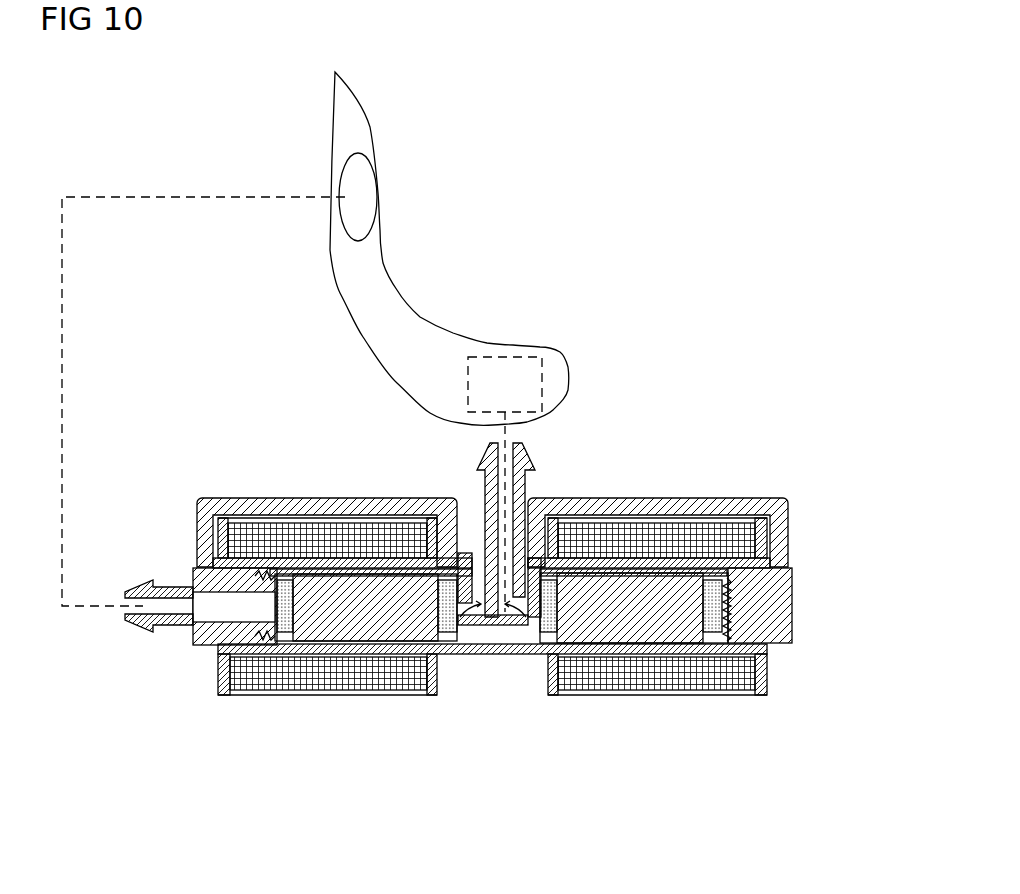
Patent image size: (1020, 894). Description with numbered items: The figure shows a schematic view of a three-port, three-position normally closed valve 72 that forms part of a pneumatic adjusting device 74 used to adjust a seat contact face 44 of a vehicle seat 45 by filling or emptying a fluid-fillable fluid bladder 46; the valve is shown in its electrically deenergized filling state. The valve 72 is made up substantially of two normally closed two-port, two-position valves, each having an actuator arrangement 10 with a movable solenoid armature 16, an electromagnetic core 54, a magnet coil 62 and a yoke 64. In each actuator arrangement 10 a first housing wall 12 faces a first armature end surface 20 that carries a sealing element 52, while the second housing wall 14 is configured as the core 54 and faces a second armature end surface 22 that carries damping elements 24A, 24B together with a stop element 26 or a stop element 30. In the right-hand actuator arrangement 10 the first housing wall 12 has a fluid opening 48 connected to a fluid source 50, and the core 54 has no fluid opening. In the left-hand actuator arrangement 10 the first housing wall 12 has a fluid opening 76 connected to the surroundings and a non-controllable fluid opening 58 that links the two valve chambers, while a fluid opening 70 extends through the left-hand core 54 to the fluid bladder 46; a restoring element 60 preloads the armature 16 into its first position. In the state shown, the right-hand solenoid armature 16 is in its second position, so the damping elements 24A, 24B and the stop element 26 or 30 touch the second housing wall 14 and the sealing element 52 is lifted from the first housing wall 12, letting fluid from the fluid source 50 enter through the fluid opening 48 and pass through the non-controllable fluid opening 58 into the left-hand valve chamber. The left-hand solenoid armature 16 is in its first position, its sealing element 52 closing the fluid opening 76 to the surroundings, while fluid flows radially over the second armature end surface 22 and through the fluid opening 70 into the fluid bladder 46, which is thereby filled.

The actuator arrangement 10 is at (341, 425).
The first housing wall 12 is at (478, 563).
The second housing wall 14 is at (132, 556).
The solenoid armature 16 is at (338, 625).
The first armature end surface 20 is at (478, 655).
The second armature end surface 22 is at (263, 572).
The damping element 24A is at (241, 572).
The damping element 24B is at (240, 695).
The stop element 26 is at (737, 609).
The stop element 30 is at (196, 572).
The seat contact face 44 is at (396, 263).
The vehicle seat 45 is at (504, 103).
The fluid bladder 46 is at (360, 153).
The fluid opening 48 is at (510, 655).
The fluid source 50 is at (505, 357).
The sealing element 52 is at (440, 645).
The electromagnetic core 54 is at (176, 586).
The non-controllable fluid opening 58 is at (502, 655).
The restoring element 60 is at (266, 642).
The magnet coil 62 is at (300, 678).
The yoke 64 is at (392, 505).
The fluid opening 70 is at (125, 610).
The 3/3 NC valve 72 is at (772, 472).
The pneumatic adjusting device 74 is at (708, 253).
The fluid opening 76 is at (488, 655).